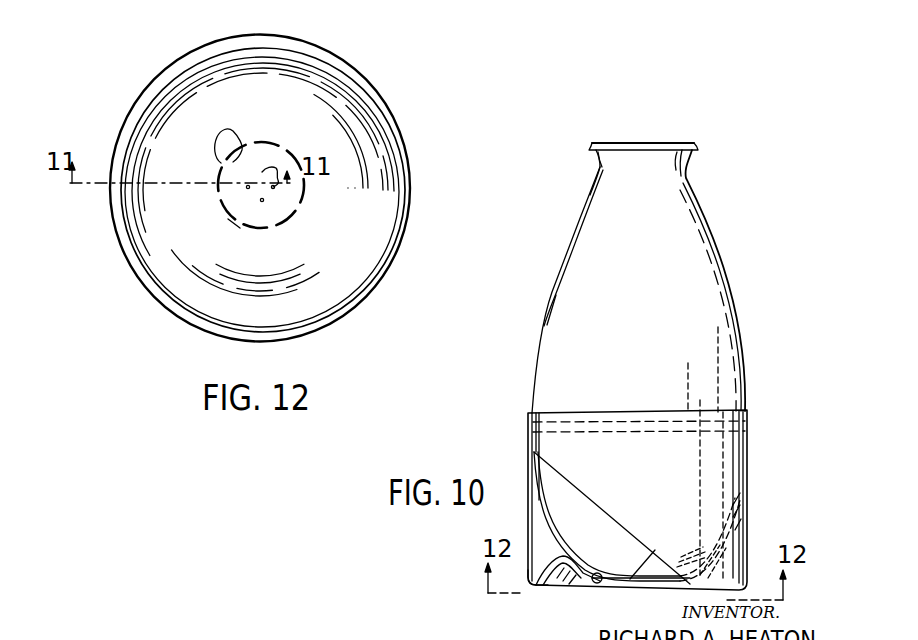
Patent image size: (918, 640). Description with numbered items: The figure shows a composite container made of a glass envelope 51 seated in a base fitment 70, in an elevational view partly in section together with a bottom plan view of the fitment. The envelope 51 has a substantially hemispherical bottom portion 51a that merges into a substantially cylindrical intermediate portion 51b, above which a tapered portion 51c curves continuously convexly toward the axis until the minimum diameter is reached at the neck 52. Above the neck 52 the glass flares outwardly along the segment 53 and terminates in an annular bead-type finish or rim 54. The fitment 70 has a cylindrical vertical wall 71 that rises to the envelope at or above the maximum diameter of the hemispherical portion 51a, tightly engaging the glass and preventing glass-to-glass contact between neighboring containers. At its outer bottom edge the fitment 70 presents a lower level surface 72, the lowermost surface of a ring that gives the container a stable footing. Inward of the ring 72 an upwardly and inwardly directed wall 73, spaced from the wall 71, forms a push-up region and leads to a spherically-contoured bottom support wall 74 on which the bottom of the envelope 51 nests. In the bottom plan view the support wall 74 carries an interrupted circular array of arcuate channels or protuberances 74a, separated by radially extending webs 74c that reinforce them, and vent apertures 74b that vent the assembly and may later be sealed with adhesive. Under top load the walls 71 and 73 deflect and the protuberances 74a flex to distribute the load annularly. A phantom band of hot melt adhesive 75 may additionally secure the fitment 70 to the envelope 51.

In FIG. 10, the envelope 51 is at (752, 358).
In FIG. 10, the hemispherical bottom portion 51a is at (557, 530).
In FIG. 10, the cylindrical intermediate portion 51b is at (747, 410).
In FIG. 10, the tapered portion 51c is at (550, 308).
In FIG. 10, the neck 52 is at (603, 166).
In FIG. 10, the segment 53 is at (586, 145).
In FIG. 10, the annular finish or rim 54 is at (596, 147).
In FIG. 12, the fitment 70 is at (124, 82).
In FIG. 10, the fitment 70 is at (654, 483).
In FIG. 10, the cylindrical vertical wall 71 is at (528, 483).
In FIG. 12, the lower level surface 72 is at (257, 334).
In FIG. 10, the lower level surface 72 is at (532, 586).
In FIG. 12, the upwardly, inwardly directed wall 73 is at (273, 324).
In FIG. 10, the upwardly, inwardly directed wall 73 is at (560, 585).
In FIG. 12, the bottom support wall 74 is at (276, 262).
In FIG. 10, the bottom support wall 74 is at (602, 573).
In FIG. 12, the channels (protuberances) 74a is at (225, 132).
In FIG. 10, the channels (protuberances) 74a is at (655, 550).
In FIG. 12, the vent apertures 74b is at (276, 165).
In FIG. 12, the spanning wall sections (webs) 74c is at (232, 216).
In FIG. 10, the band of hot melt adhesive 75 is at (717, 431).